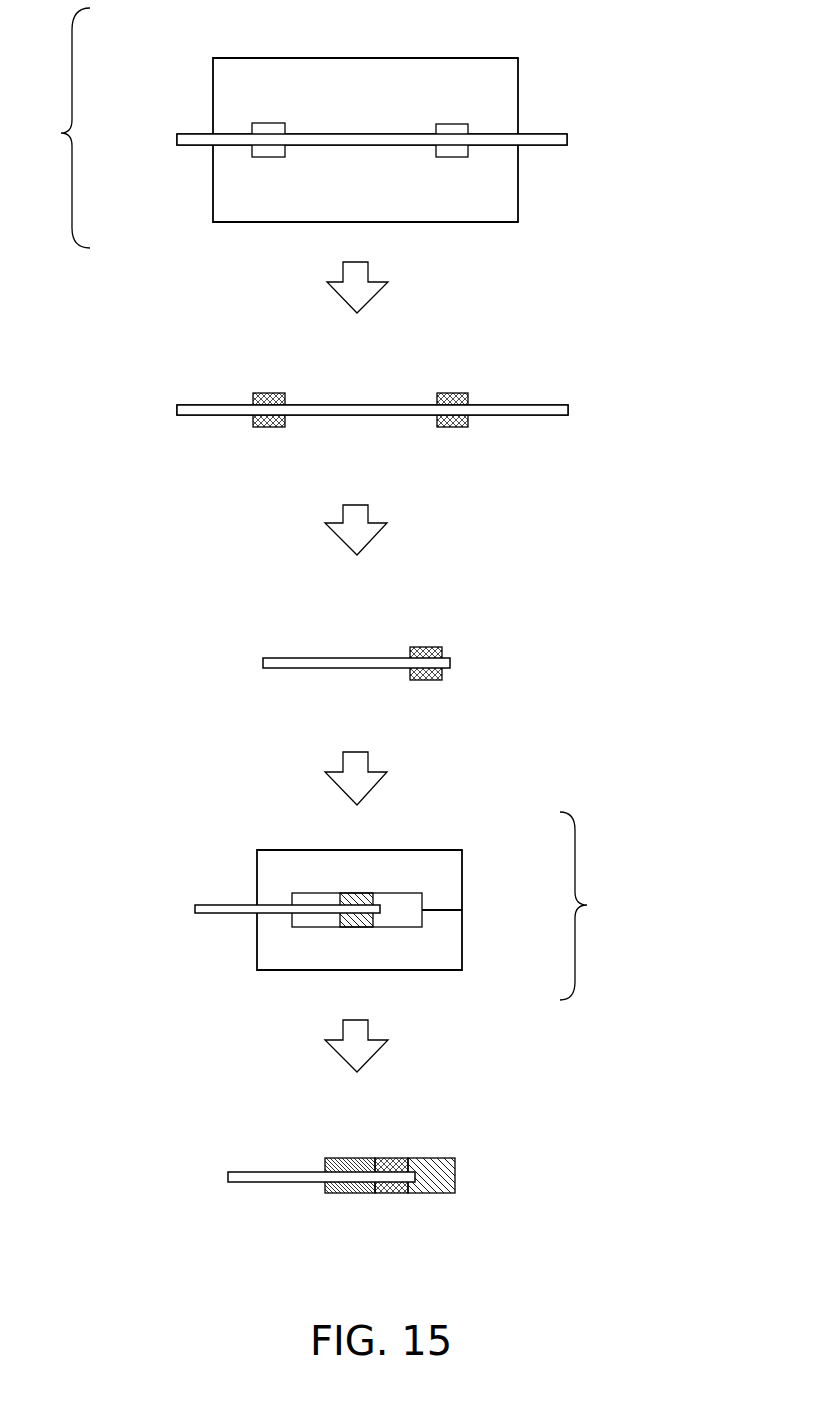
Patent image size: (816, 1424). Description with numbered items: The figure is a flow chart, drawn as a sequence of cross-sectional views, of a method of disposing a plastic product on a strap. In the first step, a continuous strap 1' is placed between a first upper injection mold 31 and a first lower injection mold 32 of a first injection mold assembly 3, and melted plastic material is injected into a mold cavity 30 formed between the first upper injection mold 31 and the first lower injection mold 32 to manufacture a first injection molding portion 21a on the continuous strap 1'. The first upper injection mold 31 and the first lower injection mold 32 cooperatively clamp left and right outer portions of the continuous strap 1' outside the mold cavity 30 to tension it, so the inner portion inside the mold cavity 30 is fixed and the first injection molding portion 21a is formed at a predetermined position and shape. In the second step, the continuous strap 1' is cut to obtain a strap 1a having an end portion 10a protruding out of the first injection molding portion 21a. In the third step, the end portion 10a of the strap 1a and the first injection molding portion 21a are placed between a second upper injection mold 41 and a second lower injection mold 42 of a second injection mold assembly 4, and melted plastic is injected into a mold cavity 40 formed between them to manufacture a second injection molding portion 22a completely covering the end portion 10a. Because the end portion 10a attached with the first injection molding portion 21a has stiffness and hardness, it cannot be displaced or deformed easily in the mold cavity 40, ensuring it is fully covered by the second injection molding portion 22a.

The first injection mold assembly 3 is at (61, 133).
The first upper injection mold 31 is at (213, 97).
The first lower injection mold 32 is at (220, 177).
The mold cavity 30 is at (267, 128).
The continuous strap 1' is at (407, 224).
The first injection molding portion 21a is at (257, 393).
The strap 1a is at (290, 668).
The second injection mold assembly 4 is at (587, 905).
The second upper injection mold 41 is at (452, 872).
The second lower injection mold 42 is at (447, 943).
The mold cavity 40 is at (312, 920).
The end portion 10a is at (380, 907).
The second injection molding portion 22a is at (435, 1192).